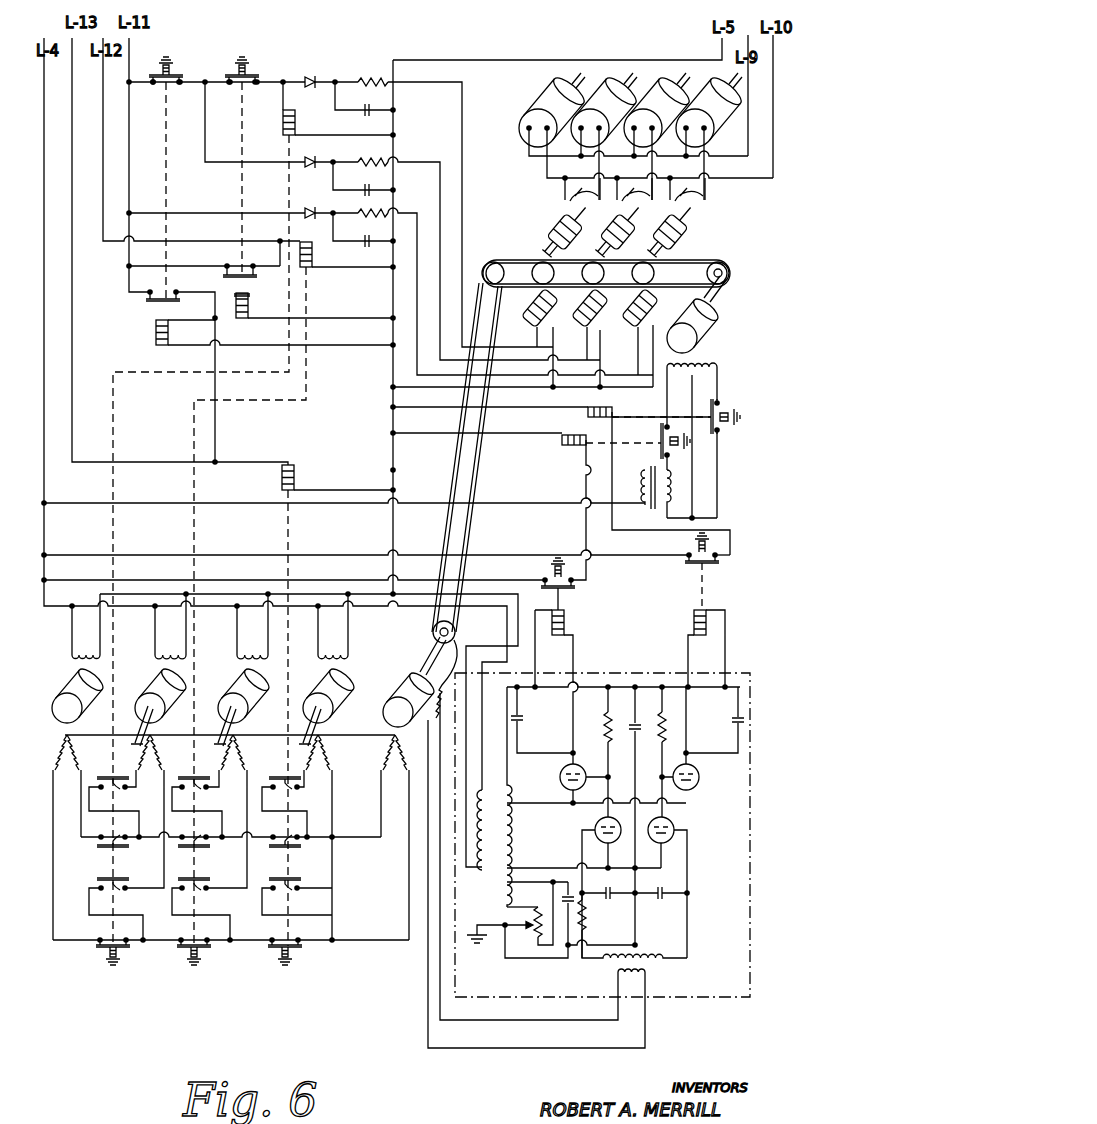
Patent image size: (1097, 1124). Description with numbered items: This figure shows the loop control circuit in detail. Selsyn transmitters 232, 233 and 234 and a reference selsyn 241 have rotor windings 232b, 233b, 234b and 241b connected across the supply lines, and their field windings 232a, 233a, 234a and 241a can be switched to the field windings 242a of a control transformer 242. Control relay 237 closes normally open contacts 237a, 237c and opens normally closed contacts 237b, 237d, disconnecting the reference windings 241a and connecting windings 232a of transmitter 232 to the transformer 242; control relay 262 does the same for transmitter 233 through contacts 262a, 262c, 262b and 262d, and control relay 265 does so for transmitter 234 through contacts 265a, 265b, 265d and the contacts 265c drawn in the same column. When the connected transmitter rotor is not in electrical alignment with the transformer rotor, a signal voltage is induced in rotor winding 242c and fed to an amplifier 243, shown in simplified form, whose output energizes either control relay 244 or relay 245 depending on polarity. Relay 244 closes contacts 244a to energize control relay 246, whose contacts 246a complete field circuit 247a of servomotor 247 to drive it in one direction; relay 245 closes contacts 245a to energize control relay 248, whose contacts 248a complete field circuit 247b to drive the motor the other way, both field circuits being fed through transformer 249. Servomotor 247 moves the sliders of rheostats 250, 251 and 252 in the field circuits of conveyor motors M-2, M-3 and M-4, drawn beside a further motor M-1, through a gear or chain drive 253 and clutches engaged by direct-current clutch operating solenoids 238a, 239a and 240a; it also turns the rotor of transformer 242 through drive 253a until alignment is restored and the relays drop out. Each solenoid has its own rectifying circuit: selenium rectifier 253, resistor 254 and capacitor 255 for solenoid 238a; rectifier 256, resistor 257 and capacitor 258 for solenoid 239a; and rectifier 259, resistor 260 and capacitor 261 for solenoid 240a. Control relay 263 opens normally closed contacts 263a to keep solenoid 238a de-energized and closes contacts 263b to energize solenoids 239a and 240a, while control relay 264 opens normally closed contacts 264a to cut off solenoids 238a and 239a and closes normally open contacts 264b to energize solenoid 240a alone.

The normally closed contacts 264a is at (152, 74).
The normally closed contacts 263a is at (234, 70).
The selenium rectifier 253 is at (306, 79).
The resistor 254 is at (368, 78).
The capacitor 255 is at (364, 99).
The control relay 237 is at (298, 128).
The rectifier 256 is at (305, 161).
The resistor 257 is at (362, 155).
The capacitor 258 is at (361, 177).
The rectifier 259 is at (305, 213).
The resistor 260 is at (362, 217).
The capacitor 261 is at (361, 228).
The contacts 263b is at (238, 266).
The control relay 262 is at (313, 264).
The normally open contacts 264b is at (164, 300).
The control relay 263 is at (248, 309).
The control relay 264 is at (168, 337).
The control relay 265 is at (295, 478).
The motor M-1 is at (553, 90).
The conveyor motor M-2 is at (611, 90).
The conveyor motor M-3 is at (664, 90).
The conveyor motor M-4 is at (716, 90).
The rheostat 250 is at (568, 195).
The rheostat 251 is at (634, 181).
The rheostat 252 is at (705, 193).
The clutch operating solenoid 239a is at (577, 327).
The clutch operating solenoid 238a is at (530, 262).
The clutch operating solenoid 240a is at (675, 268).
The drive 253a is at (477, 495).
The servomotor 247 is at (712, 312).
The field circuit 247b is at (715, 365).
The field circuit 247a is at (693, 376).
The contacts 248a is at (718, 432).
The control relay 248 is at (587, 416).
The control relay 246 is at (562, 445).
The contacts 246a is at (653, 446).
The transformer 249 is at (651, 510).
The contacts 244a is at (578, 591).
The contacts 245a is at (718, 565).
The control relay 244 is at (566, 626).
The relay 245 is at (708, 612).
The rotor winding 241b is at (80, 654).
The rotor winding 232b is at (168, 654).
The rotor winding 233b is at (250, 654).
The rotor winding 234b is at (344, 655).
The reference selsyn 241 is at (72, 688).
The selsyn transmitter 232 is at (157, 688).
The selsyn transmitter 233 is at (243, 688).
The selsyn transmitter 234 is at (340, 688).
The control transformer 242 is at (401, 680).
The rotor winding 242c is at (454, 643).
The field windings 241a is at (62, 742).
The field windings 232a is at (154, 746).
The field windings 233a is at (239, 746).
The field windings 234a is at (327, 746).
The field windings 242a is at (392, 757).
The normally open contacts 237a is at (121, 807).
The contacts 262a is at (202, 807).
The normally open contacts 265a is at (290, 790).
The normally closed contacts 237b is at (125, 853).
The contacts 262b is at (206, 853).
The normally closed contacts 265b is at (291, 843).
The normally open contacts 237c is at (120, 909).
The contacts 262c is at (204, 909).
The relay contact 265c is at (292, 894).
The normally closed contacts 237d is at (122, 948).
The contacts 262d is at (206, 948).
The normally closed contacts 265d is at (296, 948).
The amplifier 243 is at (682, 996).